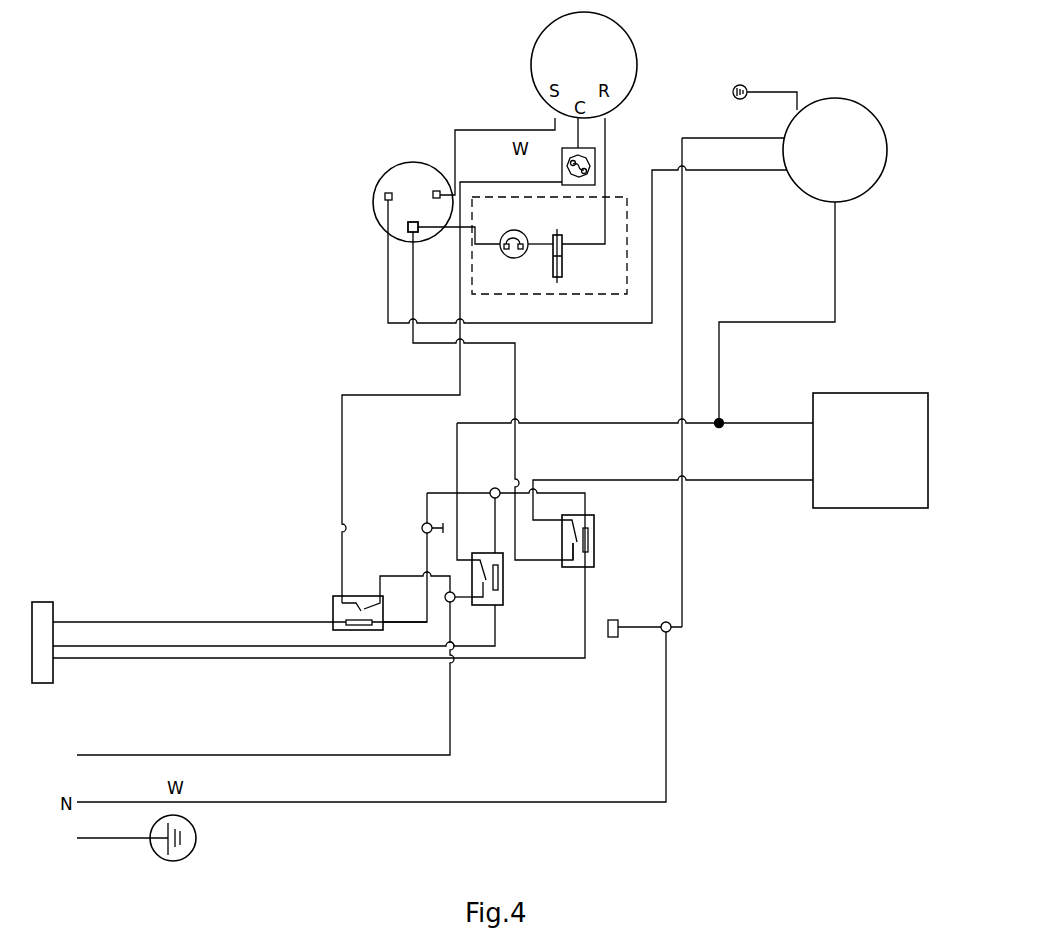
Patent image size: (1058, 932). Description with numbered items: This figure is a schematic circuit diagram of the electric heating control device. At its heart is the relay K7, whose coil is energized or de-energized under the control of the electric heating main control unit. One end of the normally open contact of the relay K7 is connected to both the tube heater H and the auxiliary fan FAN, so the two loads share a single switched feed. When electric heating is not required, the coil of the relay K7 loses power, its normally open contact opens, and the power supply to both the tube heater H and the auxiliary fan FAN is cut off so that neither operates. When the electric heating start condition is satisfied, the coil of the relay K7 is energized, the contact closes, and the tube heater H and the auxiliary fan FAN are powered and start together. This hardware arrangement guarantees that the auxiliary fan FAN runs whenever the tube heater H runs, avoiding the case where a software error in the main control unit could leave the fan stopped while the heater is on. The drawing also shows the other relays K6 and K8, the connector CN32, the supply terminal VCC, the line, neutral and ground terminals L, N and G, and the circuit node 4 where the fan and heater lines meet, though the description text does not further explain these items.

The node 4 (connection point of fan and heater R wire) 4 is at (635, 414).
The relay K6 is at (251, 601).
The relay K7 is at (500, 579).
The relay K8 is at (591, 541).
The connector CN32 is at (70, 641).
The tube heater H is at (730, 456).
The auxiliary fan FAN is at (796, 254).
The VCC supply terminal VCC is at (410, 557).
The neutral terminal N is at (379, 711).
The live line terminal L is at (121, 745).
The ground terminal G is at (128, 838).